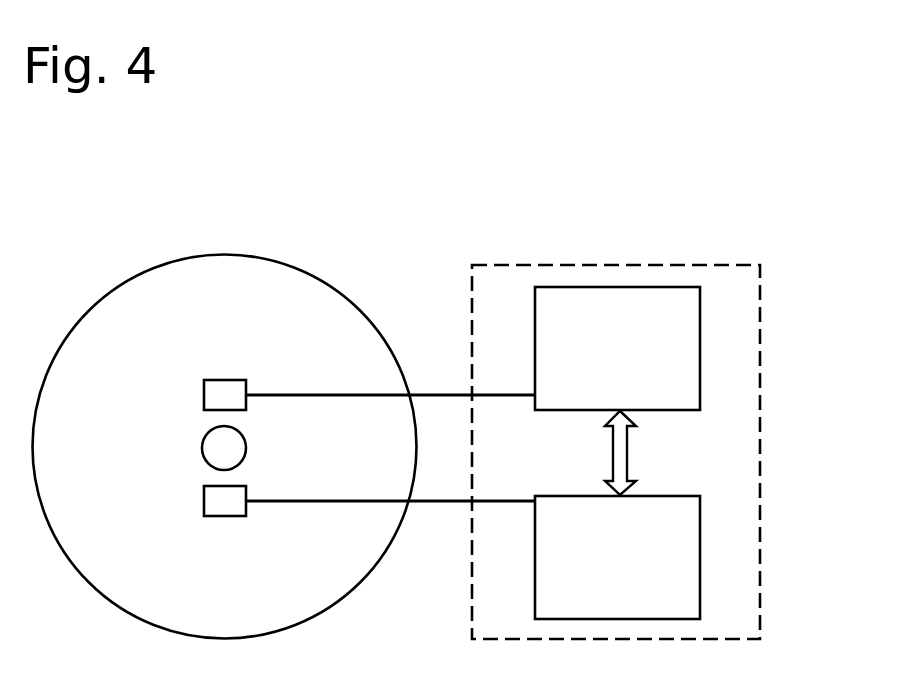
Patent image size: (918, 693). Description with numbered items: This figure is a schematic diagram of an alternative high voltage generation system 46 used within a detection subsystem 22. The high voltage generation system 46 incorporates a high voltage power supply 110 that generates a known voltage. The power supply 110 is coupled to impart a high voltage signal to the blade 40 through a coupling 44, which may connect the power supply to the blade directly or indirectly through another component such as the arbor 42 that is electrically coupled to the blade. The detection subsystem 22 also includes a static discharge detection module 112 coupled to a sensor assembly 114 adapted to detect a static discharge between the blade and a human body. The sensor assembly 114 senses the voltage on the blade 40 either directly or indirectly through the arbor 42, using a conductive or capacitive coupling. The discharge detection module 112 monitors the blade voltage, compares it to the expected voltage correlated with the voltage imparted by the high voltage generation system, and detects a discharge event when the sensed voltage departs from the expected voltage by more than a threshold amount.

The blade 40 is at (236, 318).
The arbor 42 is at (214, 442).
The coupling 44 is at (210, 392).
The sensor assembly 114 is at (213, 492).
The high voltage generation system 46 is at (529, 231).
The detection subsystem 22 is at (762, 353).
The high voltage power supply 110 is at (684, 324).
The static discharge detection module 112 is at (684, 532).